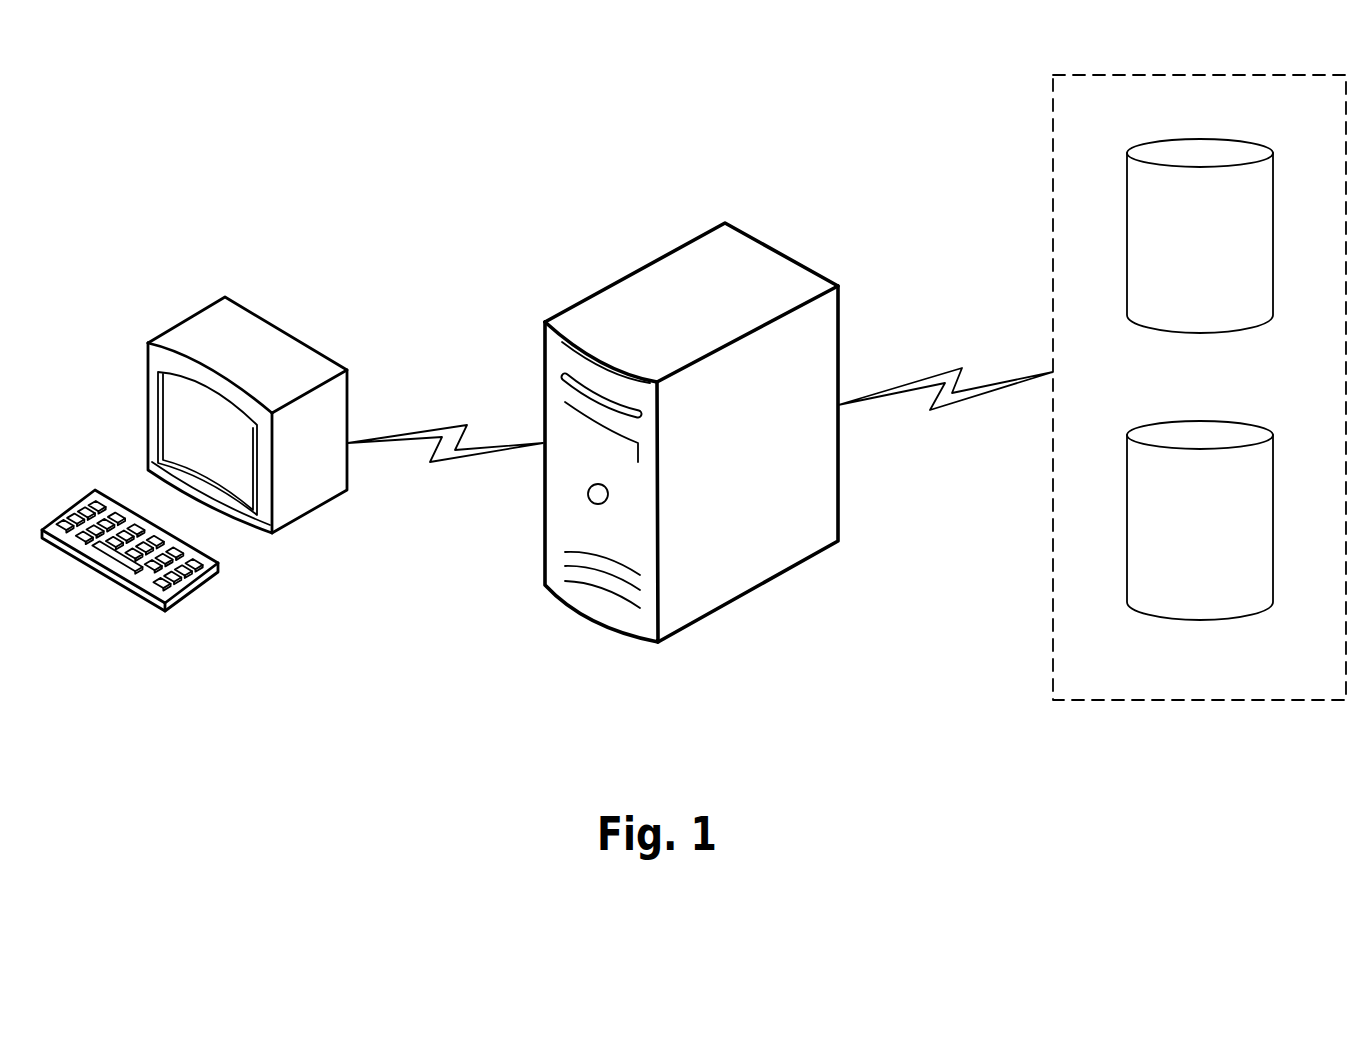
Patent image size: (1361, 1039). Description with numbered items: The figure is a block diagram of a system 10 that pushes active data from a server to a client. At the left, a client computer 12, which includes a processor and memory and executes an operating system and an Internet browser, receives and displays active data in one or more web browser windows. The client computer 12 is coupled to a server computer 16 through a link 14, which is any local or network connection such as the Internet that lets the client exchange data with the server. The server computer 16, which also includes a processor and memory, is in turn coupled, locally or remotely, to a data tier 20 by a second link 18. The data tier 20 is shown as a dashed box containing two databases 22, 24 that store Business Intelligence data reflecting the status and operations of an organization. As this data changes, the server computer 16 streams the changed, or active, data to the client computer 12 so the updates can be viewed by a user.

The system 10 is at (402, 168).
The client computer 12 is at (293, 515).
The link 14 is at (447, 450).
The server computer 16 is at (729, 582).
The link 18 is at (947, 385).
The data tier 20 is at (1199, 387).
The database 22 is at (1200, 236).
The database 24 is at (1200, 520).